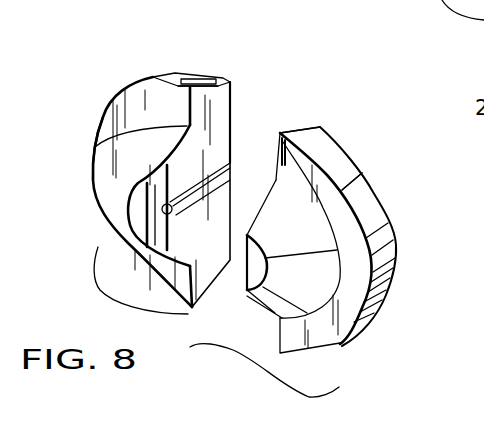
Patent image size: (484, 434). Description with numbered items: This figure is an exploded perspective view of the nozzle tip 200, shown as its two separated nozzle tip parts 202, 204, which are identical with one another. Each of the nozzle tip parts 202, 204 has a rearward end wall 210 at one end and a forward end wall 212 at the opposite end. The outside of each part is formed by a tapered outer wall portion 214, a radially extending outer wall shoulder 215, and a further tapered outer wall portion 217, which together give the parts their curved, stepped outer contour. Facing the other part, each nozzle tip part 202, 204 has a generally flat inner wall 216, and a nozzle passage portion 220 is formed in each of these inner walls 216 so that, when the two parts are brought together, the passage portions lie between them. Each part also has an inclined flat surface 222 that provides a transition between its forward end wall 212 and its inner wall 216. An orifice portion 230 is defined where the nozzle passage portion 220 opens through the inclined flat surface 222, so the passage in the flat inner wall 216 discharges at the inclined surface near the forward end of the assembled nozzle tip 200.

The coupling assembly 200 is at (133, 42).
The nozzle tip part 202 is at (124, 86).
The nozzle tip part 204 is at (386, 215).
The rearward end wall 210 is at (231, 84).
The forward end wall 212 is at (139, 209).
The tapered outer wall portion 214 is at (147, 155).
The radially extending outer wall shoulder 215 is at (110, 117).
The generally flat inner wall 216 is at (218, 127).
The tapered outer wall portion 217 is at (198, 78).
The nozzle passage portion 220 is at (270, 158).
The inclined flat surface 222 is at (153, 232).
The orifice portion 230 is at (175, 214).